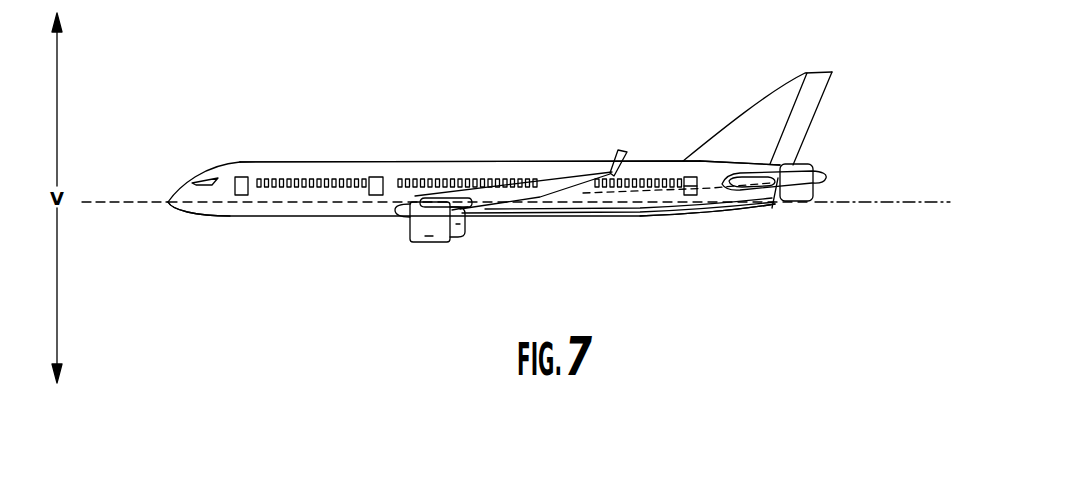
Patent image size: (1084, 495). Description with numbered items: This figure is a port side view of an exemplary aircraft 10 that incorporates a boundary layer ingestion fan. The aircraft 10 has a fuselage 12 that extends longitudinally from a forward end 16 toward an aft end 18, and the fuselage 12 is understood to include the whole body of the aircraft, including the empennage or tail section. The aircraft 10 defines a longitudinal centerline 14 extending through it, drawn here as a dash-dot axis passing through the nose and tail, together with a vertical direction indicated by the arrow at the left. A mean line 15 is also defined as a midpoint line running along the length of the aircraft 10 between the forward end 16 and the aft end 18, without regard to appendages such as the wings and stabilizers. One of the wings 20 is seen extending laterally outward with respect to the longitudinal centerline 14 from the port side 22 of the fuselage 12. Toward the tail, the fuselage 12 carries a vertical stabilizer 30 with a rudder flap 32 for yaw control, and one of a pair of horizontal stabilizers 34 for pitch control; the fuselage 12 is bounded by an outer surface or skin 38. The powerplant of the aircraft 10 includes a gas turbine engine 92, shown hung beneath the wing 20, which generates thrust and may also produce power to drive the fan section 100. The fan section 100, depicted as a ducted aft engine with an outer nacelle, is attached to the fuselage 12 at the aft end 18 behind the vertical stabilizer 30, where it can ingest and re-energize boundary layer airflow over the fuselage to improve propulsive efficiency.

The aircraft 10 is at (537, 169).
The fuselage 12 is at (265, 216).
The longitudinal centerline 14 is at (90, 202).
The mean line 15 is at (660, 192).
The forward end 16 is at (181, 217).
The aft end 18 is at (725, 232).
The wing 20 is at (562, 183).
The port side 22 is at (615, 212).
The vertical stabilizer 30 is at (778, 105).
The rudder flap 32 is at (812, 103).
The horizontal stabilizer 34 is at (775, 200).
The outer surface or skin 38 is at (415, 153).
The gas turbine engine 92 is at (428, 240).
The fan section 100 is at (815, 148).